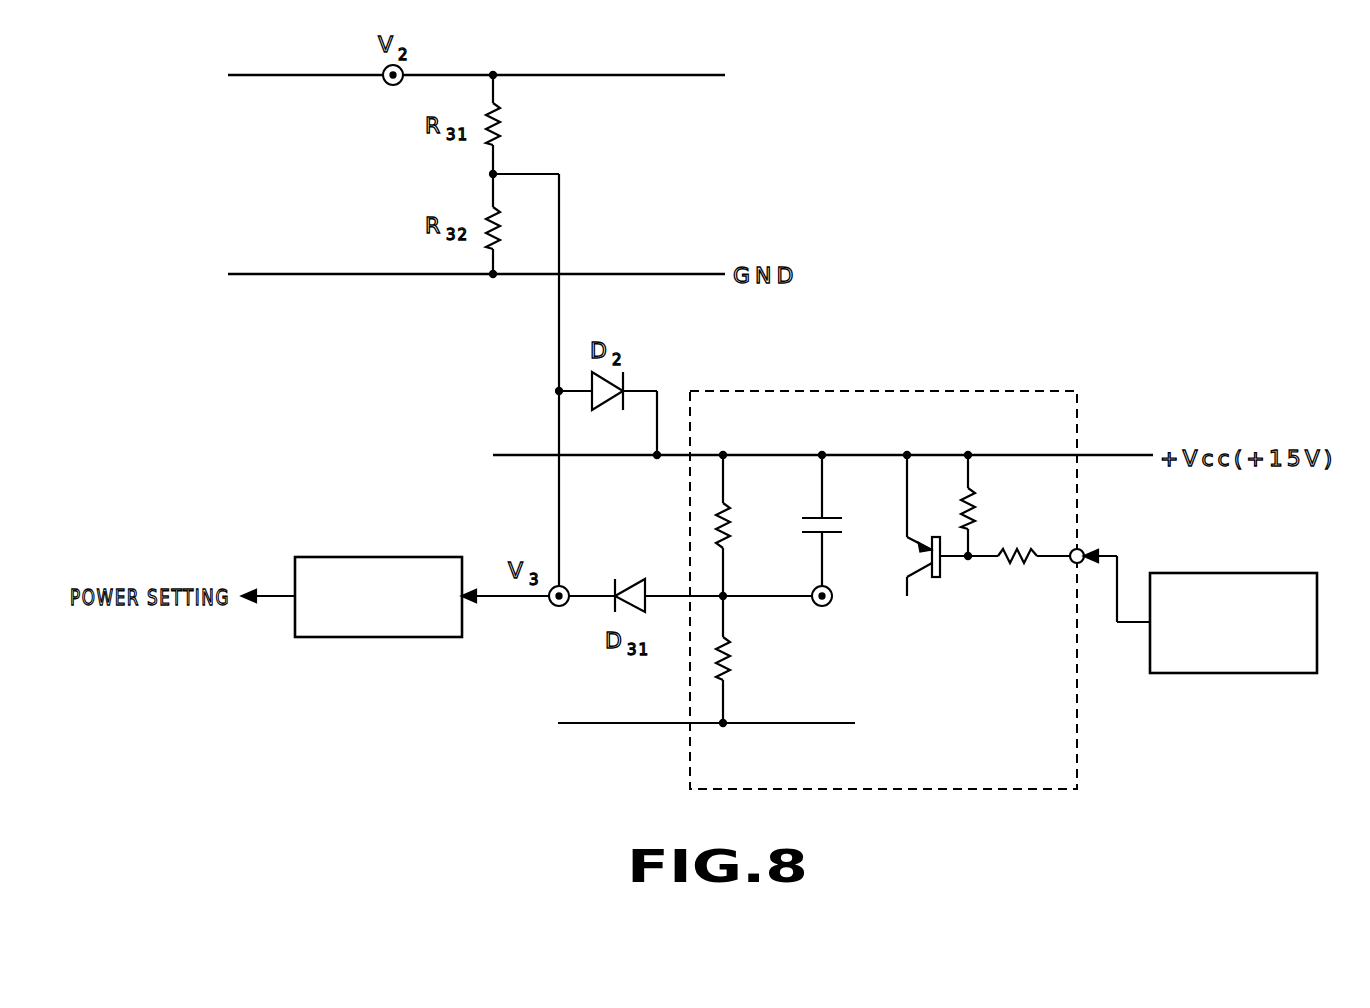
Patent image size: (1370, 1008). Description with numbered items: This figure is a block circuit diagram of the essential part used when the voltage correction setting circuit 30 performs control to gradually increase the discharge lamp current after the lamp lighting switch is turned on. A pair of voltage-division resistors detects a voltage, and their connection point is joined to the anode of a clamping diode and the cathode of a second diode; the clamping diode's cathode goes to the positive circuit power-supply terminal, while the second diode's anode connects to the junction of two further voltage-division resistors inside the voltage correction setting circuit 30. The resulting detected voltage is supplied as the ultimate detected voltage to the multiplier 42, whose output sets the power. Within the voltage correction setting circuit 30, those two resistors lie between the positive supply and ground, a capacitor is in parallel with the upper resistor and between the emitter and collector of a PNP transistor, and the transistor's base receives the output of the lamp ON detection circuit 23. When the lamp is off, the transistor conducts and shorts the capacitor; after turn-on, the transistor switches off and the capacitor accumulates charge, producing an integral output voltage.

The voltage correction setting circuit 30 is at (935, 391).
The multiplier 42 is at (375, 557).
The lamp ON detection circuit 23 is at (1230, 573).